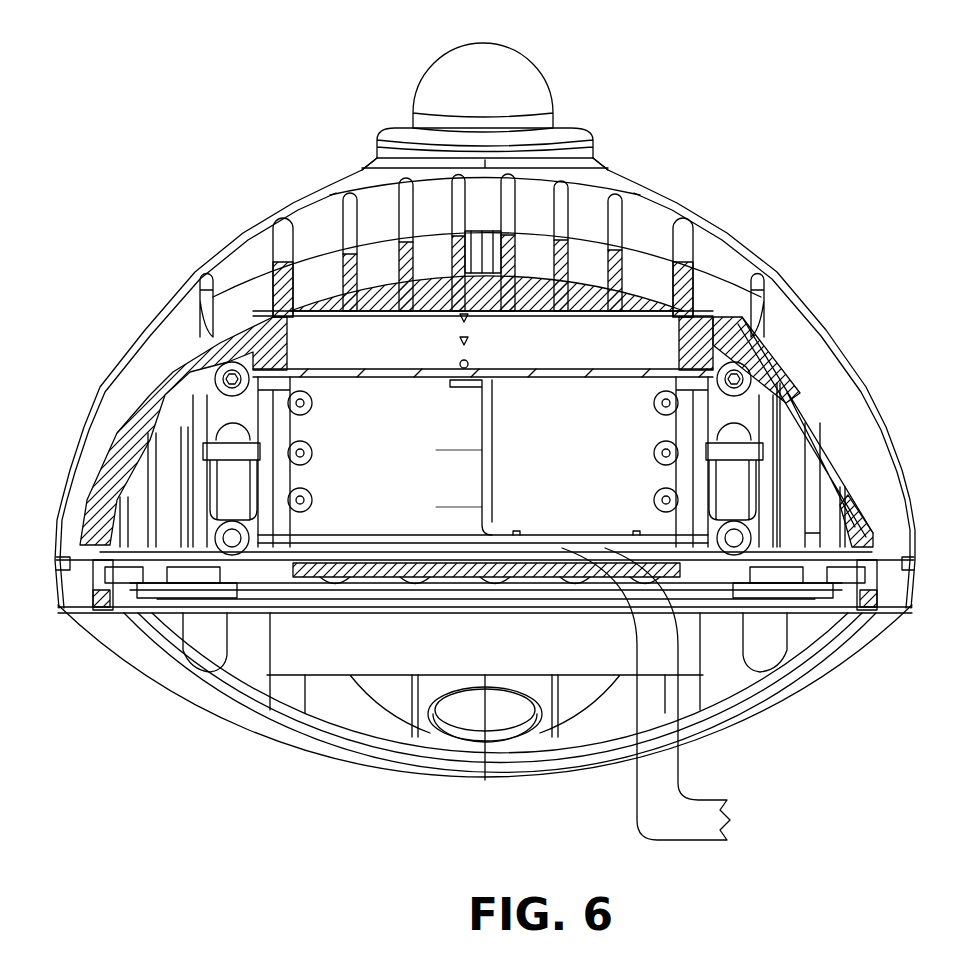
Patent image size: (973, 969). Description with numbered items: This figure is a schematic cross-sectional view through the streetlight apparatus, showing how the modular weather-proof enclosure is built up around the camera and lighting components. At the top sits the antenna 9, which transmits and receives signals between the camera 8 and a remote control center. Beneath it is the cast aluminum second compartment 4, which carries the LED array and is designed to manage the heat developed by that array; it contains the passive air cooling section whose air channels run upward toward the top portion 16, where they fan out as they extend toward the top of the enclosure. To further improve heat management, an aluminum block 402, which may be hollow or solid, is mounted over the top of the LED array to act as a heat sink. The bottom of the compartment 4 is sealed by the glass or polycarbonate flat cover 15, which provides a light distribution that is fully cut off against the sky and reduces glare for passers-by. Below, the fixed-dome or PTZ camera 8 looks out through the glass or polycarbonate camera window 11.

The second compartment 4 is at (838, 397).
The camera device 8 is at (502, 714).
The antenna 9 is at (497, 68).
The camera window 11 is at (450, 774).
The flat cover 15 is at (385, 592).
The top portion of the passive air cooling section 16 is at (302, 248).
The aluminum block 402 is at (592, 437).